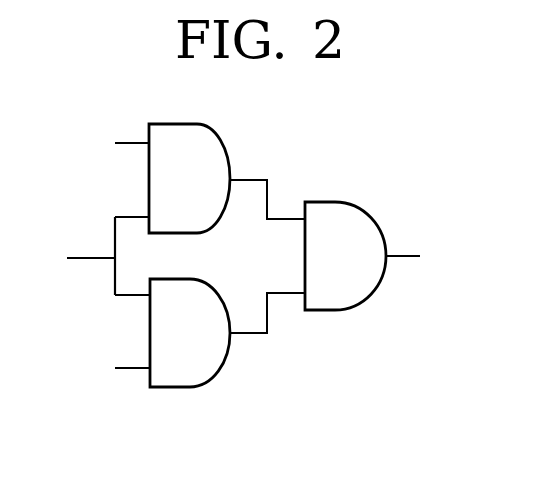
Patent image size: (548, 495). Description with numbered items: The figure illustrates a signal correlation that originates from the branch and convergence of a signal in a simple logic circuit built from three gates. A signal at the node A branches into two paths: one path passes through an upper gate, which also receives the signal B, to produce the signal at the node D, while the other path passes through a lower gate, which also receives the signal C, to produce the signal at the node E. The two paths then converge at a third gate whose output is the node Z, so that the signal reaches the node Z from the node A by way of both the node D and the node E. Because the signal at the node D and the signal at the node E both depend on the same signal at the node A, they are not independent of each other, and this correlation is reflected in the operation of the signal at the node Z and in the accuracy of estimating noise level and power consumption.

The node A is at (96, 256).
The input signal B is at (119, 144).
The input signal C is at (119, 370).
The node D is at (267, 189).
The node E is at (267, 326).
The node Z is at (414, 257).